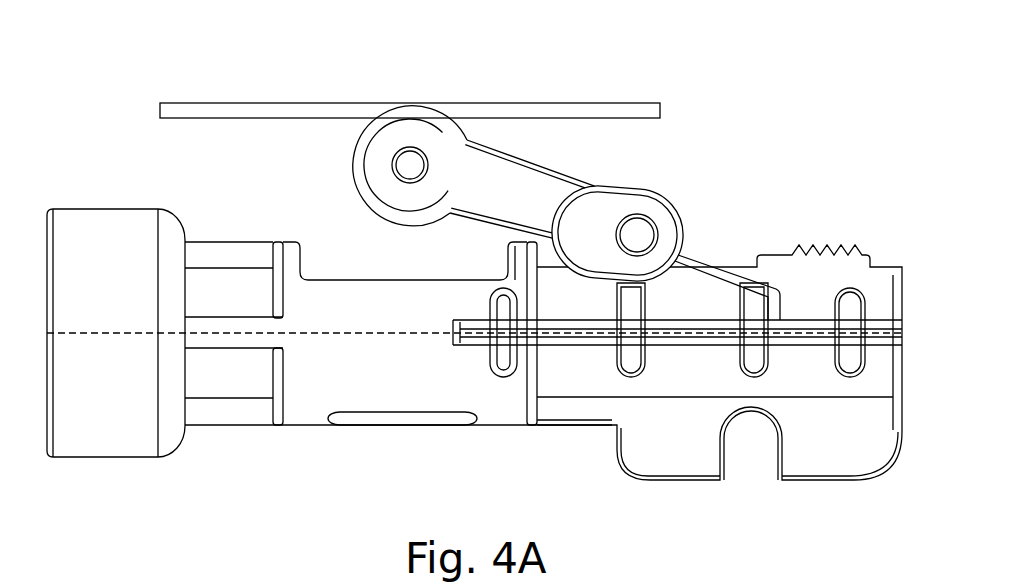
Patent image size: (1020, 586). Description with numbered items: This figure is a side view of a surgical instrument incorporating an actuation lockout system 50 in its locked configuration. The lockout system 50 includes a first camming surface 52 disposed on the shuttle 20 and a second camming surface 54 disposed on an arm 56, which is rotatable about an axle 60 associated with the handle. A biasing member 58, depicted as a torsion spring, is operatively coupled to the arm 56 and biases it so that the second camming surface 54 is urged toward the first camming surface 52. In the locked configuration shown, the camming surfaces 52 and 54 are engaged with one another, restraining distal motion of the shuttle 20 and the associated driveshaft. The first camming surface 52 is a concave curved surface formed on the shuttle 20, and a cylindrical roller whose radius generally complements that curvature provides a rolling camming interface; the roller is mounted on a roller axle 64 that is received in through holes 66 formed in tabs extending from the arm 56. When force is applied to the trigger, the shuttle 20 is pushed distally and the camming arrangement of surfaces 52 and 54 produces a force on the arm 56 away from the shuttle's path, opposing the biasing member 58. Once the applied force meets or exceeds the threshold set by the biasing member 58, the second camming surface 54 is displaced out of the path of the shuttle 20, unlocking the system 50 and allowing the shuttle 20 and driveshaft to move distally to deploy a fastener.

The shuttle 20 is at (313, 403).
The actuation lockout system 50 is at (730, 121).
The first camming surface 52 is at (653, 282).
The second camming surface 54 is at (681, 227).
The arm 56 is at (527, 191).
The biasing member 58 is at (410, 107).
The axle 60 is at (408, 168).
The roller axle 64 is at (637, 235).
The through holes 66 is at (722, 277).